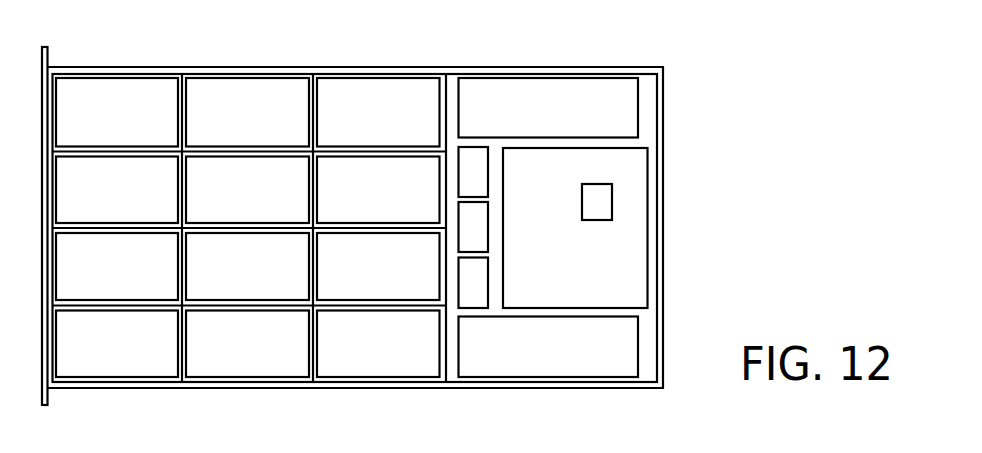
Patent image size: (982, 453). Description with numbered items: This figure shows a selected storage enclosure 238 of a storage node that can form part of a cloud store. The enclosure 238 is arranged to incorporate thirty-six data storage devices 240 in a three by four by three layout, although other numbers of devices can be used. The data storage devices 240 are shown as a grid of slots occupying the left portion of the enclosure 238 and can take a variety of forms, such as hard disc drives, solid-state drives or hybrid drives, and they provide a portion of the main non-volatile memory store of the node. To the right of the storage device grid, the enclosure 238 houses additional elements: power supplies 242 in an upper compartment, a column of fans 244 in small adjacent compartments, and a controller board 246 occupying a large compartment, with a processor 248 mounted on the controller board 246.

The storage enclosure 238 is at (348, 68).
The data storage devices 240 is at (248, 92).
The power supplies 242 is at (570, 88).
The fans 244 is at (470, 162).
The controller board 246 is at (615, 258).
The processor 248 is at (612, 203).